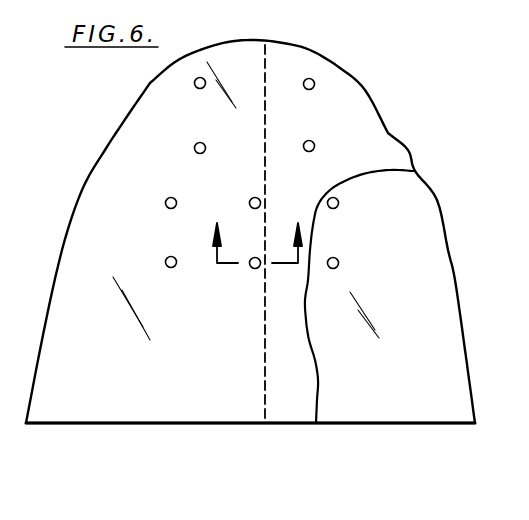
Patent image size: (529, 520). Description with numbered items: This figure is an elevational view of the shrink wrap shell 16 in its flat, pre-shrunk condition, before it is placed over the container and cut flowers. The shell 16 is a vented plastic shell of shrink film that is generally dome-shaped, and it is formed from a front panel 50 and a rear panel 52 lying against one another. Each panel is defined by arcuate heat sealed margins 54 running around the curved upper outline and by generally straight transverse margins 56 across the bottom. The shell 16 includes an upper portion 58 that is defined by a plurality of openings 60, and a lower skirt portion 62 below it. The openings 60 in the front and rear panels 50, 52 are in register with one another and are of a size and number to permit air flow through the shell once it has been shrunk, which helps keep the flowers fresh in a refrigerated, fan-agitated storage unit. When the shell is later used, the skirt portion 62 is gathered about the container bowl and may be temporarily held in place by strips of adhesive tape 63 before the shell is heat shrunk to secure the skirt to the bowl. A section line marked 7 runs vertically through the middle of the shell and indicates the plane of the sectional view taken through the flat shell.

The vented plastic shell 16 is at (441, 198).
The front panel 50 is at (389, 134).
The rear panel 52 is at (438, 269).
The arcuate heat sealed margins 54 is at (84, 192).
The generally straight transverse margins 56 is at (339, 426).
The upper portion 58 is at (366, 90).
The openings 60 is at (166, 207).
The lower skirt portion 62 is at (29, 393).
The strips of adhesive tape 63 is at (262, 336).
The section line 7- 7 is at (261, 231).